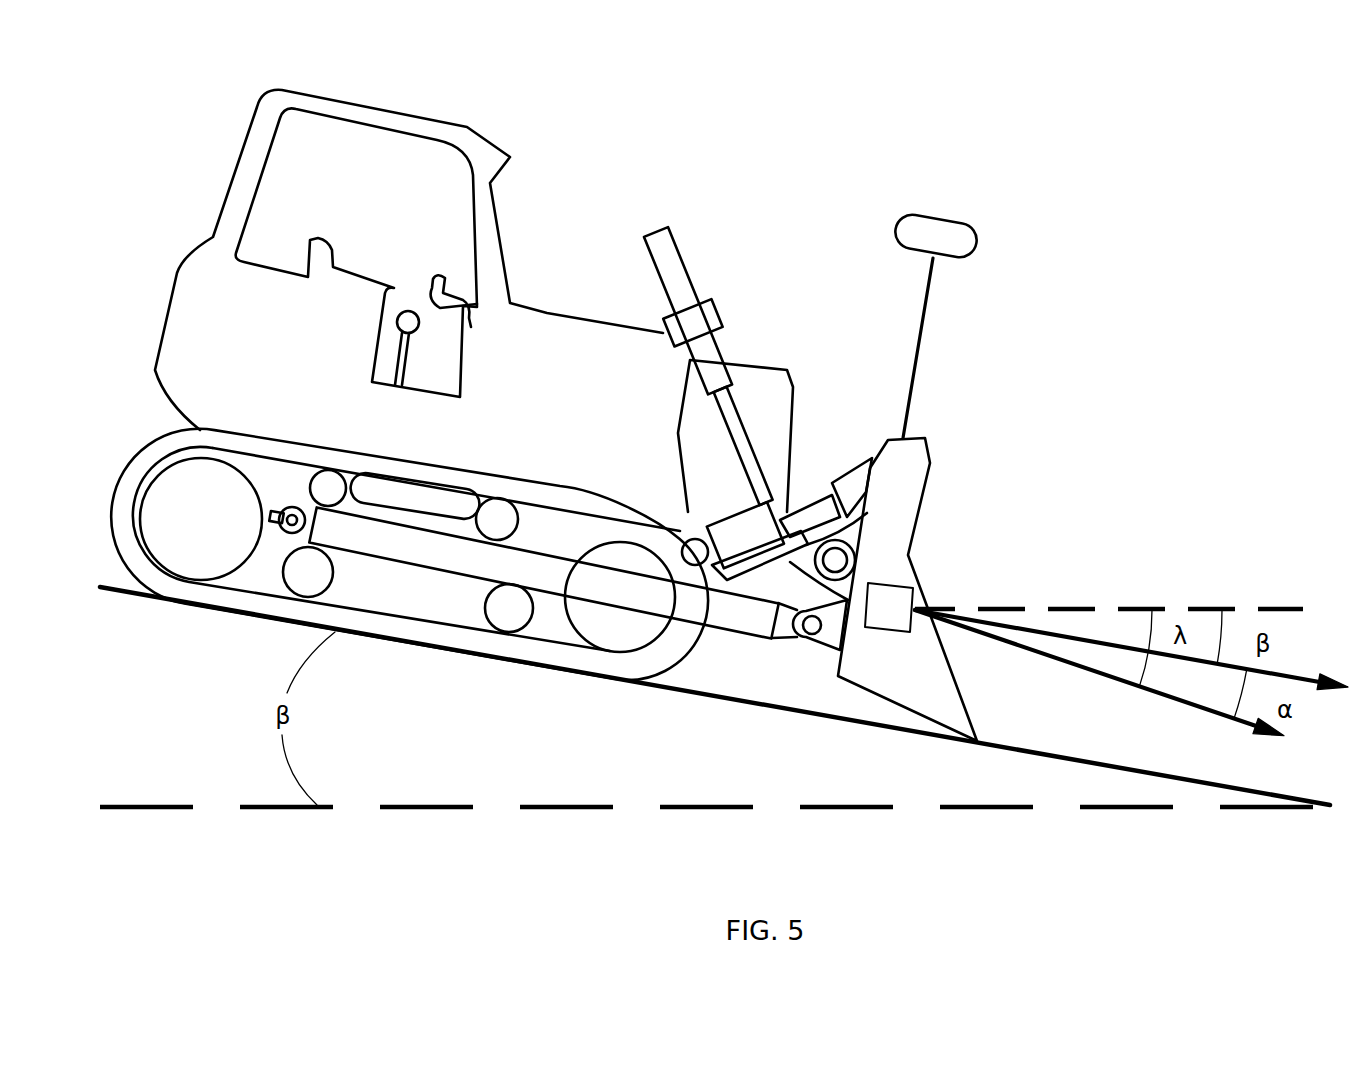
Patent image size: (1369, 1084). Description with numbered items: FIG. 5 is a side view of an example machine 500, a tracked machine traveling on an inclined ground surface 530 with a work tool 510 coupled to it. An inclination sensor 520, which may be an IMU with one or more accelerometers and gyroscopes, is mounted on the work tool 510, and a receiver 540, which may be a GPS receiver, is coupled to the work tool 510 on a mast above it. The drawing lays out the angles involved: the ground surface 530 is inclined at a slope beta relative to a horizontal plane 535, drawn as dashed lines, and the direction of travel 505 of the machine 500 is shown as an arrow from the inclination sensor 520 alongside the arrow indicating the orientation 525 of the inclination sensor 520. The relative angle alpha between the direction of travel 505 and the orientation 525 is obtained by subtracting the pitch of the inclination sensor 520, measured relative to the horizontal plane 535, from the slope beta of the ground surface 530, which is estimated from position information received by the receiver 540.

The machine 500 is at (214, 133).
The direction of travel 505 is at (1133, 650).
The work tool 510 is at (923, 500).
The inclination sensor 520 is at (889, 607).
The orientation 525 is at (1100, 685).
The ground surface 530 is at (715, 696).
The horizontal plane 535 is at (706, 693).
The receiver 540 is at (978, 240).